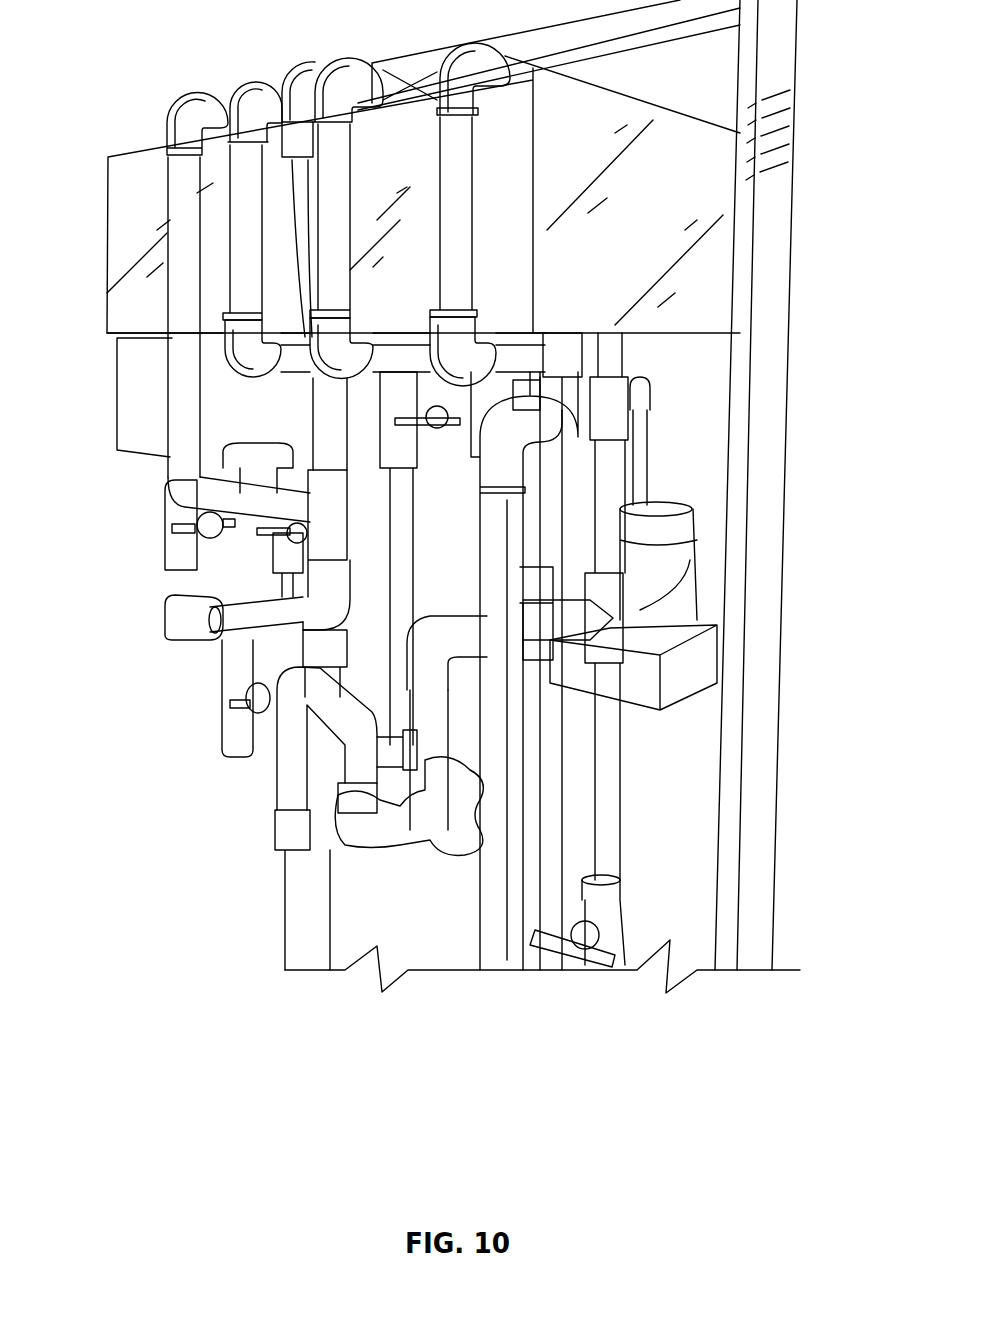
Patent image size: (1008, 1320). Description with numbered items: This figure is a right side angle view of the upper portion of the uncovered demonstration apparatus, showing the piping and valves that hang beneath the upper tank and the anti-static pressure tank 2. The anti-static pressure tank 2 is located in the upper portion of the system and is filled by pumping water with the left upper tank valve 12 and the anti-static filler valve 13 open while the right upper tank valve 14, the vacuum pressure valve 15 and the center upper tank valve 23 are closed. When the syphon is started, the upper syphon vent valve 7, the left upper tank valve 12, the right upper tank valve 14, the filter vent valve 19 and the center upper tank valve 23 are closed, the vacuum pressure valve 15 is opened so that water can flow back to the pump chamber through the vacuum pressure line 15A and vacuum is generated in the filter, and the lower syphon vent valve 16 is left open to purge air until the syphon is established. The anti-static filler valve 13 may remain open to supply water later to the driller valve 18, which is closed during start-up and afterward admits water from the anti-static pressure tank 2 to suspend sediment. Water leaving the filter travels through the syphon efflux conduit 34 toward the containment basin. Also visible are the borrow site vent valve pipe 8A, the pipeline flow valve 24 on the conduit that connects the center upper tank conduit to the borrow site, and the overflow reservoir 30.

The anti-static pressure tank 2 is at (152, 405).
The upper syphon vent valve 7 is at (262, 498).
The borrow site vent valve pipe 8A is at (557, 470).
The left upper tank valve 12 is at (285, 550).
The anti-static filler valve 13 is at (203, 525).
The right upper tank valve 14 is at (497, 410).
The vacuum pressure valve 15 is at (590, 605).
The vacuum pressure line 15A is at (608, 490).
The lower syphon vent valve 16 is at (185, 605).
The driller valve 18 is at (232, 697).
The filter vent valve 19 is at (455, 805).
The center upper tank valve 23 is at (387, 428).
The pipeline flow valve 24 is at (615, 905).
The overflow reservoir 30 is at (660, 565).
The syphon efflux conduit 34 is at (280, 845).